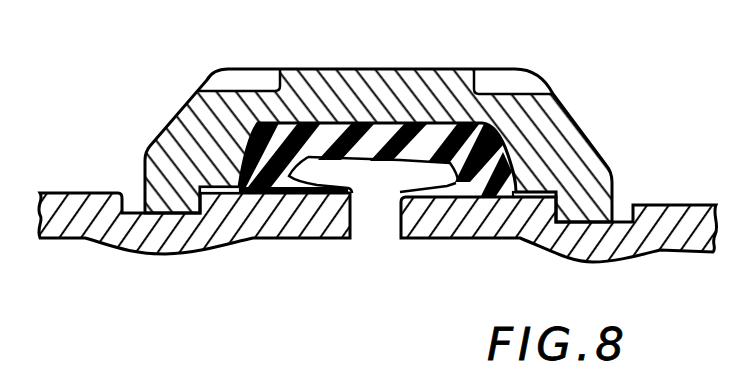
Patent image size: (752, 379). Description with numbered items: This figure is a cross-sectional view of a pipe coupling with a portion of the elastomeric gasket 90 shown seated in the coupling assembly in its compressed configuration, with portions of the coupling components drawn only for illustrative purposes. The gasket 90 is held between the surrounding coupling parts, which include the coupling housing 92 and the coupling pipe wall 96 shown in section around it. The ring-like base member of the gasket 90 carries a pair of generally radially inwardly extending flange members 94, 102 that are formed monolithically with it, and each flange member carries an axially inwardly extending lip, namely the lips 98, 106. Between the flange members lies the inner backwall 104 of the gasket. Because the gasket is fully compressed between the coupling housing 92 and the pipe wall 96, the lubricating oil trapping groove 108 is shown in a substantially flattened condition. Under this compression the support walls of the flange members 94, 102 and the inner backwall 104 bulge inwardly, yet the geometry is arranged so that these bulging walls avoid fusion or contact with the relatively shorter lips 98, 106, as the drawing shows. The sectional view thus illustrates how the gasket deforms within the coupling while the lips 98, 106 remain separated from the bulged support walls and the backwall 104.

The gasket 90 is at (408, 124).
The seal 92 is at (409, 119).
The flange member 94 is at (256, 163).
The plate 96 is at (297, 200).
The lip 98 is at (293, 192).
The flange member 102 is at (500, 165).
The inner backwall 104 is at (381, 165).
The lip 106 is at (445, 186).
The lubricating oil trapping groove 108 is at (487, 198).